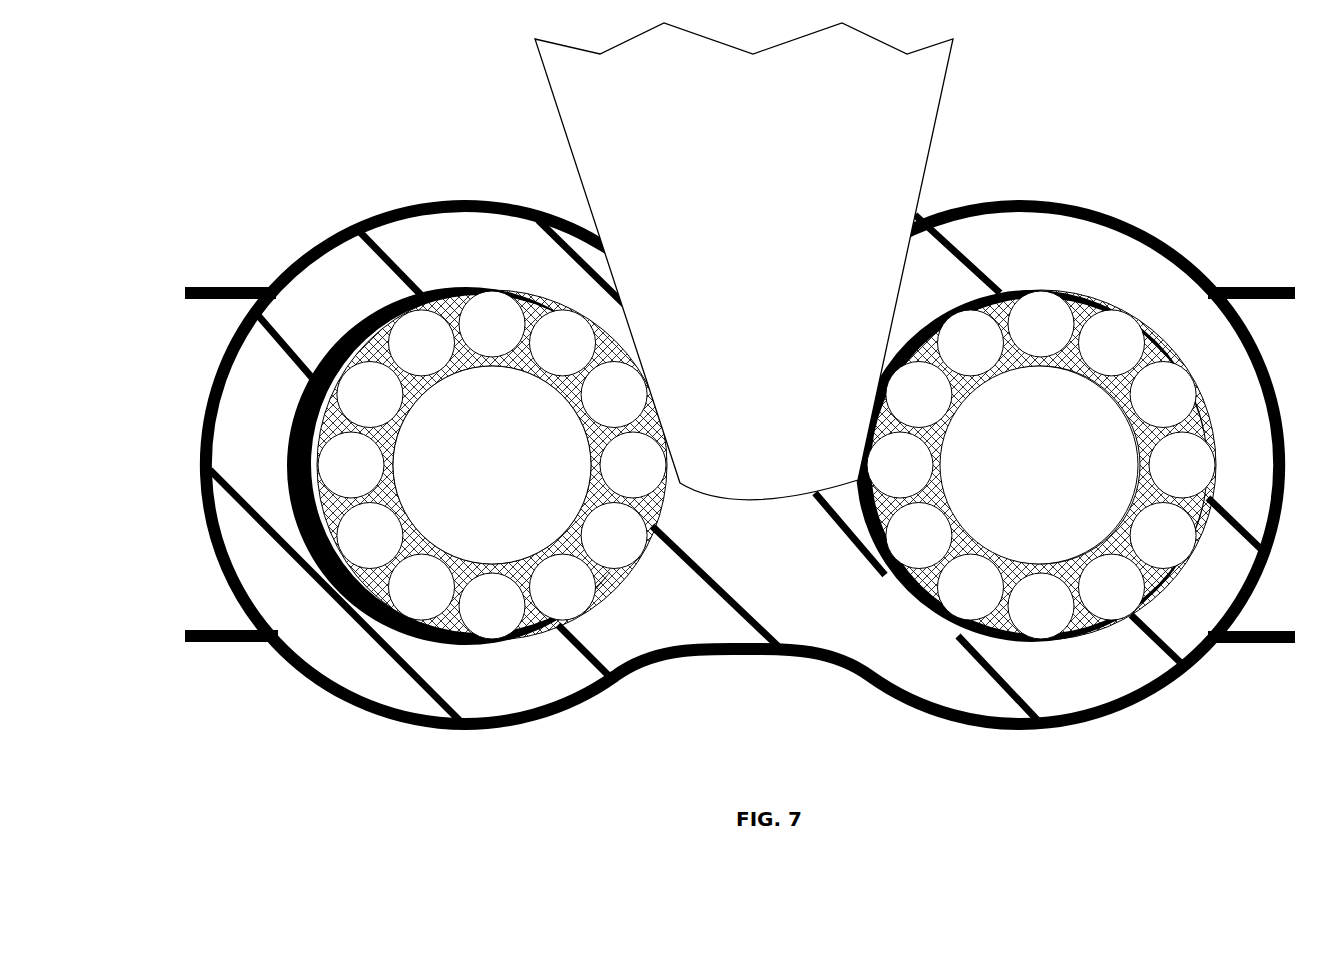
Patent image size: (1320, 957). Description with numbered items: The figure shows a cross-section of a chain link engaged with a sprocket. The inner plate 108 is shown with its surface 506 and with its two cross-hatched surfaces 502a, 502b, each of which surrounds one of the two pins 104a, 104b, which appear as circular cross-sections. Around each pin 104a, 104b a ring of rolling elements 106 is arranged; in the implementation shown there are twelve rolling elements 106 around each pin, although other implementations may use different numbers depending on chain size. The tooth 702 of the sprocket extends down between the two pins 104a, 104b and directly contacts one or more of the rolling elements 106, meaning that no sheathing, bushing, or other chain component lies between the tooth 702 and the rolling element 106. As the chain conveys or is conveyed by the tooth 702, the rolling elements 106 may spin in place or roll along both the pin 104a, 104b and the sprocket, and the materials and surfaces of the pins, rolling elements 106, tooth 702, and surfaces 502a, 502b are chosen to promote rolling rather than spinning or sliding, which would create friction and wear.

The inner plate 108 is at (382, 214).
The surface of the inner plate 502a is at (455, 316).
The surface of the inner plate 502b is at (975, 297).
The surface of the inner plate 506 is at (745, 549).
The sprocket tooth 702 is at (761, 274).
The pin 104a is at (466, 471).
The pin 104b is at (1019, 476).
The rolling elements 106 is at (995, 354).